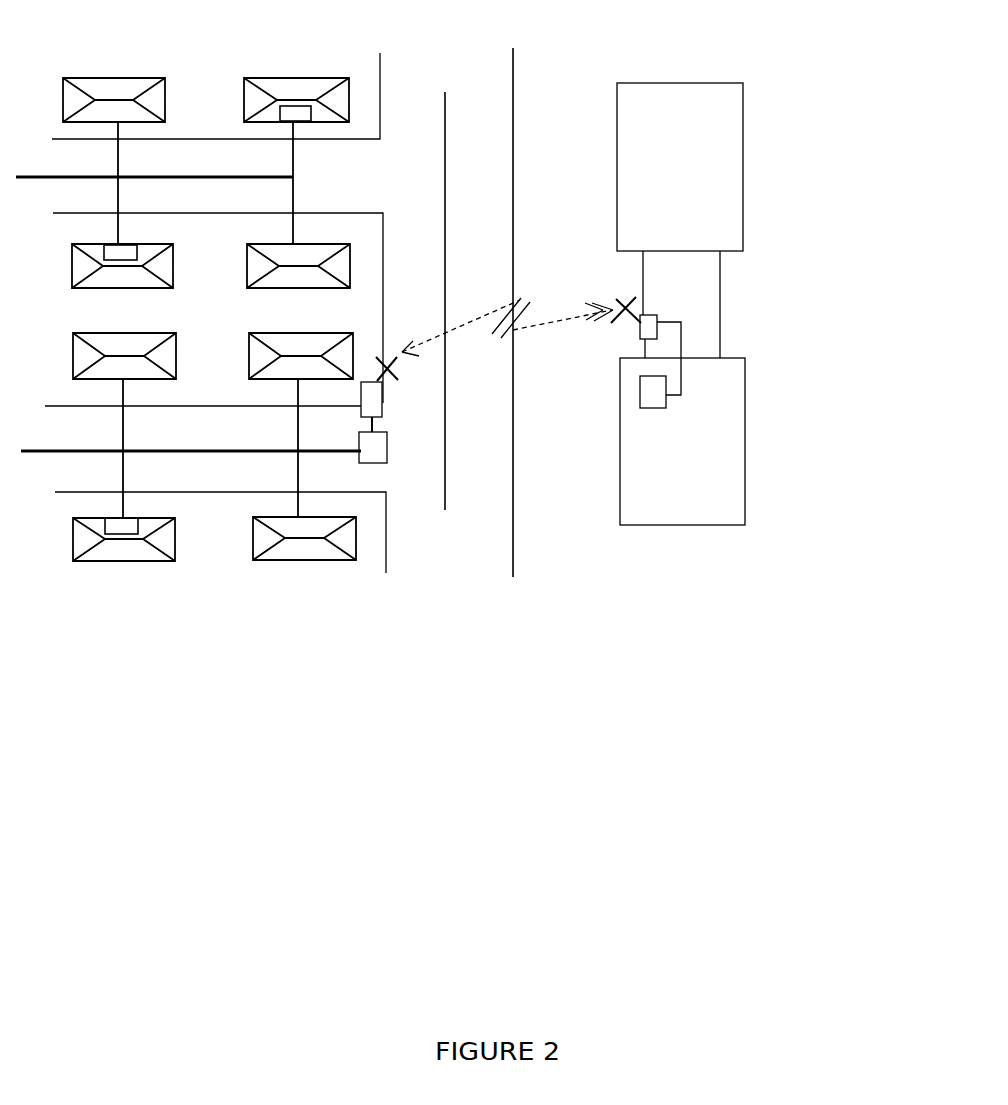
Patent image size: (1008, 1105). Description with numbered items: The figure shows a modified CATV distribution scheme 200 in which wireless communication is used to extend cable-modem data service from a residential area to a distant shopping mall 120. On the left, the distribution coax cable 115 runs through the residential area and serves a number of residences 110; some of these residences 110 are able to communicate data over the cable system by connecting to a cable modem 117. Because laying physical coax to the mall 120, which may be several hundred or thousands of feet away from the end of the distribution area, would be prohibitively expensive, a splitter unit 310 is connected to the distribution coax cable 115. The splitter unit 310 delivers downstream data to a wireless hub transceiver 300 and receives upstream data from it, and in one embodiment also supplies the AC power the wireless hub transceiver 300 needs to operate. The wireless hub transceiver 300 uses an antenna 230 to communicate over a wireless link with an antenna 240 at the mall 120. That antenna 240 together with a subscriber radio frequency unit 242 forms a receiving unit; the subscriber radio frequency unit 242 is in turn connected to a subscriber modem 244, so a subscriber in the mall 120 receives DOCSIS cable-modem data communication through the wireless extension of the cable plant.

The residences 110 is at (244, 97).
The coax cable 115 is at (72, 177).
The cable modem 117 is at (303, 115).
The shopping mall 120 is at (668, 304).
The modified CATV distribution scheme 200 is at (883, 193).
The antenna 230 is at (393, 378).
The antenna 240 is at (633, 297).
The subscriber radio frequency unit 242 is at (640, 327).
The subscriber modem 244 is at (648, 410).
The wireless hub transceiver 300 is at (375, 419).
The splitter unit 310 is at (388, 444).